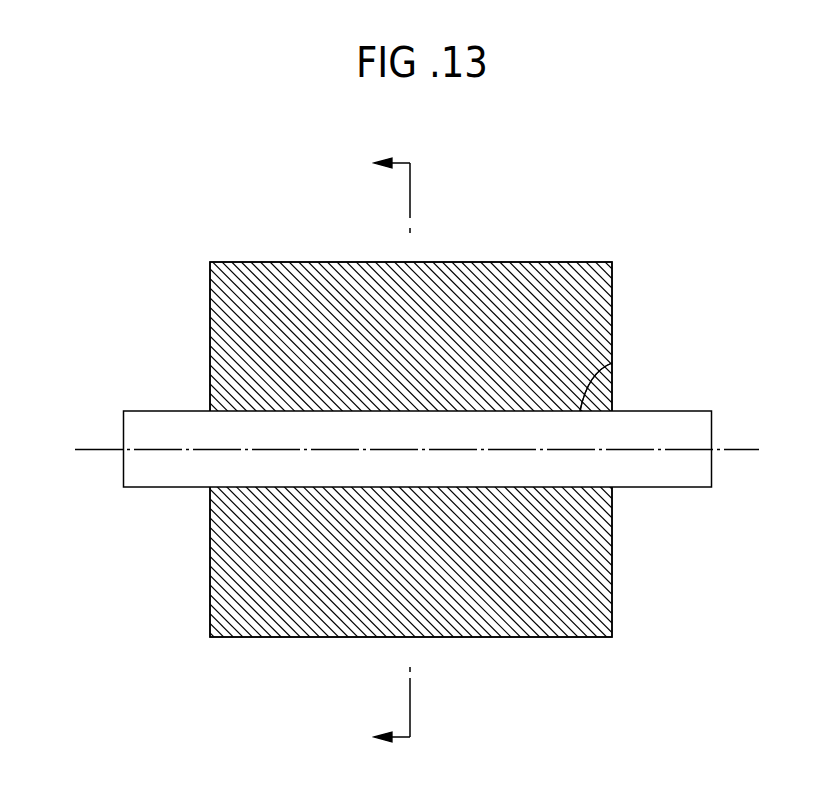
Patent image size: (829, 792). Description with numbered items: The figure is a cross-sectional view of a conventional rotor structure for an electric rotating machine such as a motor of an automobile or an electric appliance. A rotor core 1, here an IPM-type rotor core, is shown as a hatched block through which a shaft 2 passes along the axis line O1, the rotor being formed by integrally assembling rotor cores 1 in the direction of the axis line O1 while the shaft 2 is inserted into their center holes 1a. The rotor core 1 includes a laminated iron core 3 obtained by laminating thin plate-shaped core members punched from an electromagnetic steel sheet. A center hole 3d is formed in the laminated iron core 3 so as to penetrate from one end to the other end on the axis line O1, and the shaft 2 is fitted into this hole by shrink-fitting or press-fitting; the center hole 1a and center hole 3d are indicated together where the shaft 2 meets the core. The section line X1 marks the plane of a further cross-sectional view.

The rotor core 1 is at (538, 262).
The shaft 2 is at (663, 411).
The laminated iron core 3 is at (478, 262).
The center hole 1a is at (613, 364).
The center hole 3d is at (613, 364).
The axis line O1 is at (397, 450).
The section line X1 is at (373, 452).